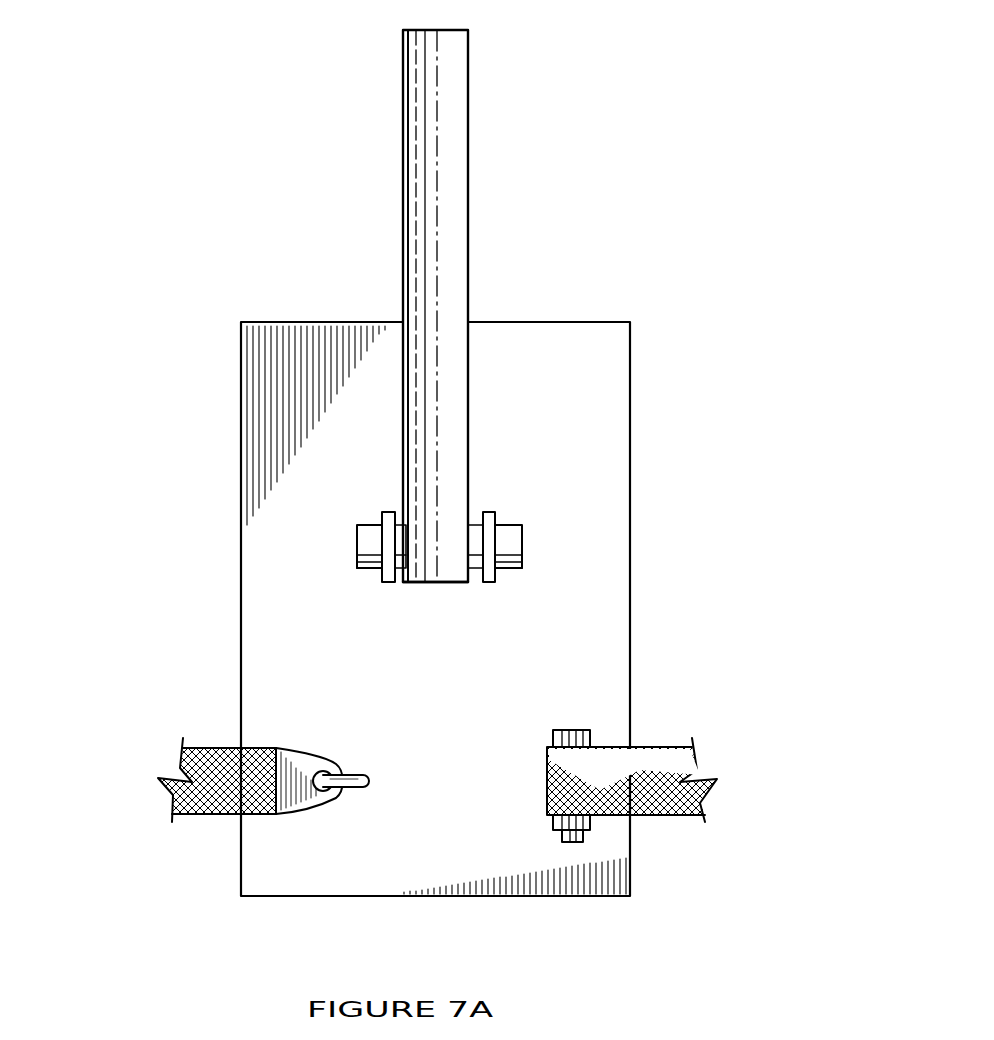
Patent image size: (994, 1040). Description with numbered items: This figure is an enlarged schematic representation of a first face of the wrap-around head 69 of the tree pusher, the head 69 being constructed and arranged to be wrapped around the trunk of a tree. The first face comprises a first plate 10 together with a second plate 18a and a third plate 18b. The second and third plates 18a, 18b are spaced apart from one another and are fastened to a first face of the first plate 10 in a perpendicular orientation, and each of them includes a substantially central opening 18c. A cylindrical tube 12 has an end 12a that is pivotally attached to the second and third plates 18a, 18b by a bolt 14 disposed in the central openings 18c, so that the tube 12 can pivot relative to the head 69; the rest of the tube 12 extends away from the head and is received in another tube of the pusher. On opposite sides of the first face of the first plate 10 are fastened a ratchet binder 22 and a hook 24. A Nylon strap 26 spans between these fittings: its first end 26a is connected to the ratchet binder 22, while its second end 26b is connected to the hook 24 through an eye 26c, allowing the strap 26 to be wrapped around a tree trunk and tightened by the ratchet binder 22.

The first plate 10 is at (630, 454).
The cylindrical tube 12 is at (468, 68).
The end 12a is at (440, 583).
The bolt 14 is at (522, 546).
The second plate 18a is at (487, 512).
The third plate 18b is at (382, 522).
The central opening 18c is at (376, 572).
The ratchet binder 22 is at (590, 740).
The hook 24 is at (353, 792).
The Nylon strap 26 is at (205, 706).
The first end 26a is at (697, 760).
The second end 26b is at (180, 762).
The eye 26c is at (293, 807).
The wrap-around head 69 is at (648, 286).